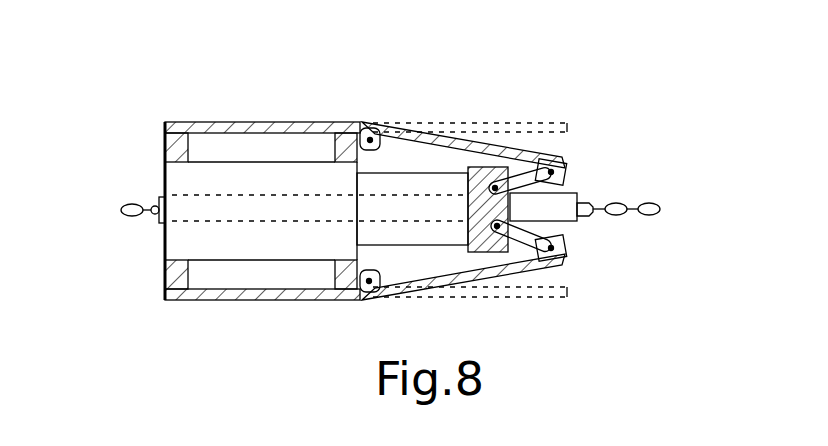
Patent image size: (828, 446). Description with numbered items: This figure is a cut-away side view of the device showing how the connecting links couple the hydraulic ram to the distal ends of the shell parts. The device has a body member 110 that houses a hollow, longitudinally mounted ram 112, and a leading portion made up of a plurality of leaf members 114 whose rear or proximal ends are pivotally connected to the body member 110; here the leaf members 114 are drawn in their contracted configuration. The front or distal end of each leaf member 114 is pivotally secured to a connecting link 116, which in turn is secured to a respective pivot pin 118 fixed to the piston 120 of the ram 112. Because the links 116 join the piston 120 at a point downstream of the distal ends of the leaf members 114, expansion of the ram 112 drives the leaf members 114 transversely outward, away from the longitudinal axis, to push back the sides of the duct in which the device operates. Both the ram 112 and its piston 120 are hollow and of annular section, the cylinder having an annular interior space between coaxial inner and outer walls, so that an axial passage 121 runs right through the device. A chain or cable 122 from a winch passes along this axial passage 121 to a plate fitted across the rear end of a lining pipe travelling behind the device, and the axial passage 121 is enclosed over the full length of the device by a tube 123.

The body member 110 is at (265, 122).
The ram 112 is at (182, 235).
The leaf members 114 is at (473, 142).
The connecting link 116 is at (525, 177).
The pivot pin 118 is at (468, 170).
The piston 120 is at (427, 230).
The axial passage 121 is at (282, 208).
The chain or cable 122 is at (128, 204).
The tube 123 is at (161, 198).